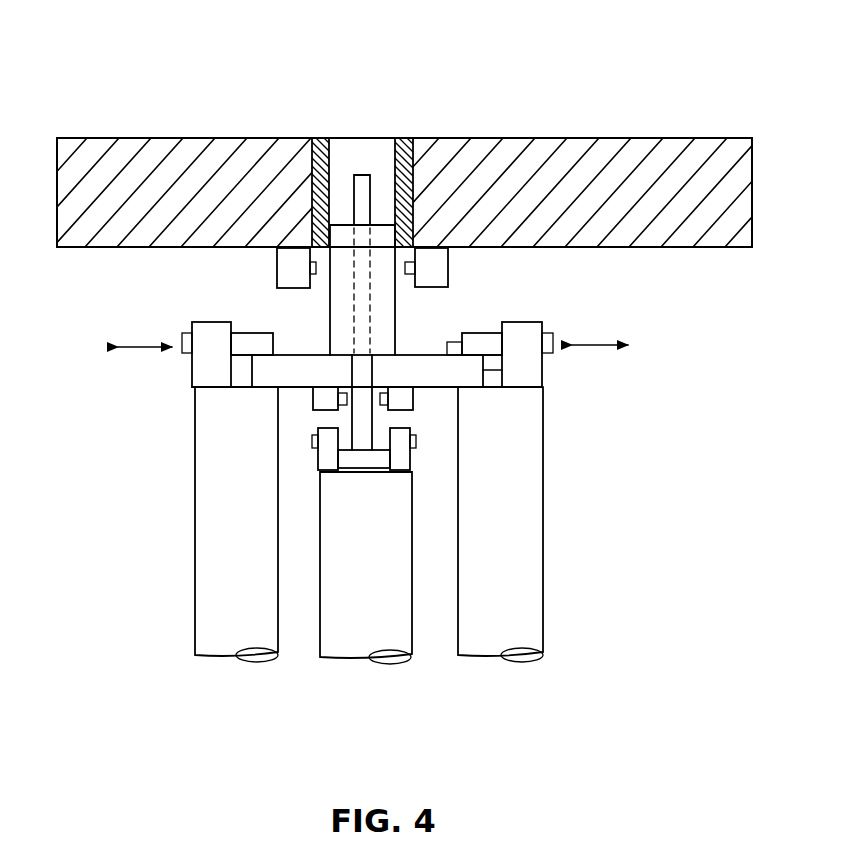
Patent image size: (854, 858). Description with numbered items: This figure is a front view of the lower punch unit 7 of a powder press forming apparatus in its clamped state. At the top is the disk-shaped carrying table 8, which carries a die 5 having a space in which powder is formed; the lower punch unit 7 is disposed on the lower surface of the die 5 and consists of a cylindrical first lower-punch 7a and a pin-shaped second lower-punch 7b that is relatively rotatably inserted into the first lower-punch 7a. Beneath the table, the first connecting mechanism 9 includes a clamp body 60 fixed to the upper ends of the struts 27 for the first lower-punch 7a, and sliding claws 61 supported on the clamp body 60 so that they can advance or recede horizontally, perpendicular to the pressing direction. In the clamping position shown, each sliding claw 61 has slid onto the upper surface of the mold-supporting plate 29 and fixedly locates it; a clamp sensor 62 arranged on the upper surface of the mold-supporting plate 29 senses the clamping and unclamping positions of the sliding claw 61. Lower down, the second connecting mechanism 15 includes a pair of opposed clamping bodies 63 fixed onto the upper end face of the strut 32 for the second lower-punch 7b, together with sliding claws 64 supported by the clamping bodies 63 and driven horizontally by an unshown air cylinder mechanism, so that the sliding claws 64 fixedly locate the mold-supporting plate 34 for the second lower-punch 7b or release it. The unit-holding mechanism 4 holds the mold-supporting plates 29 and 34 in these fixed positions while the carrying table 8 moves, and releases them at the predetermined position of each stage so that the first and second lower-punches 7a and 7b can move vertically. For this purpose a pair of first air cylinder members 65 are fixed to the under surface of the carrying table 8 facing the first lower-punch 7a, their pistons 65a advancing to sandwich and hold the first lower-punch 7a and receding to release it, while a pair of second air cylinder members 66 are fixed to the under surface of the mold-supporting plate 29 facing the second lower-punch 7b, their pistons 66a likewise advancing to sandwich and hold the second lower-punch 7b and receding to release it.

The unit-holding mechanism 4 is at (296, 393).
The die 5 is at (334, 137).
The lower punch unit 7 is at (387, 186).
The first lower-punch 7a is at (390, 222).
The second lower-punch 7b is at (345, 188).
The carrying table 8 is at (677, 129).
The first connecting mechanism 9 is at (179, 311).
The second connecting mechanism 15 is at (437, 437).
The strut 27 is at (195, 540).
The mold-supporting plate 29 is at (483, 368).
The strut 32 is at (412, 597).
The mold-supporting plate 34 is at (360, 467).
The clamp body 60 is at (192, 372).
The sliding claw 61 is at (258, 333).
The clamp sensor 62 is at (455, 341).
The clamping body 63 is at (313, 462).
The sliding claw 64 is at (313, 443).
The first air cylinder member 65 is at (277, 266).
The piston 65a is at (315, 275).
The second air cylinder member 66 is at (313, 398).
The piston 66a is at (352, 385).